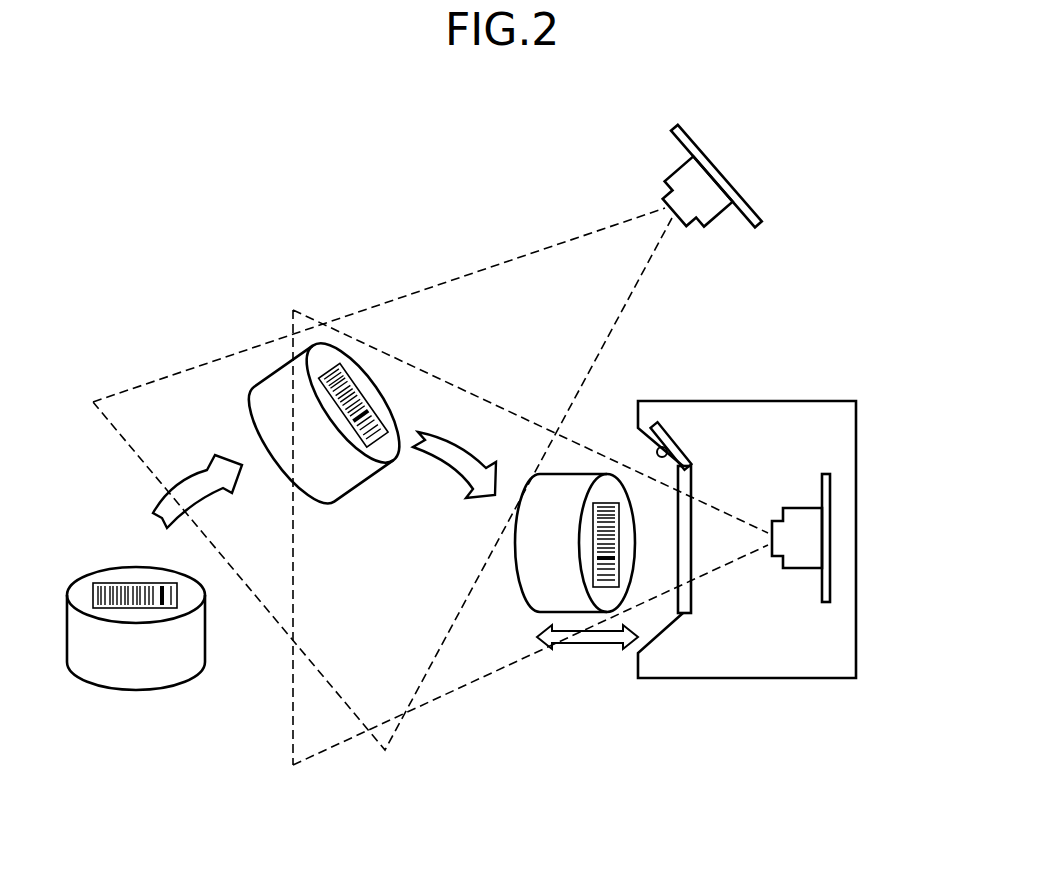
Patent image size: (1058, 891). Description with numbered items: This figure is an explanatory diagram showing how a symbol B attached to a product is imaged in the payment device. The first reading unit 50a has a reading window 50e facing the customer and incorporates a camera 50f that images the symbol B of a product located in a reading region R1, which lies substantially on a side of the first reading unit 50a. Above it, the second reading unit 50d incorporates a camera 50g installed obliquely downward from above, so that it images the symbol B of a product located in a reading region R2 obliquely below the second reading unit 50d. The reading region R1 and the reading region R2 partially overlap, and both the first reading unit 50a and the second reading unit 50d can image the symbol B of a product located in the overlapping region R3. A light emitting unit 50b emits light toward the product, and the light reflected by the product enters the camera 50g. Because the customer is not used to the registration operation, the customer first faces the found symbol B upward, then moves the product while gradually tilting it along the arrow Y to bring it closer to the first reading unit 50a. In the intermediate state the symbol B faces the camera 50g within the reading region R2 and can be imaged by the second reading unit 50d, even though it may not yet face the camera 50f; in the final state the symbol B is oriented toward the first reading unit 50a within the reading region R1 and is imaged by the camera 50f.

The first reading unit 50a is at (856, 466).
The light emitting unit 50b is at (678, 435).
The second reading unit 50d is at (730, 177).
The reading window 50e is at (690, 593).
The camera 50f is at (807, 507).
The camera 50g is at (672, 171).
The symbol B is at (108, 583).
The reading region R1 is at (483, 681).
The reading region R2 is at (175, 377).
The overlapping region R3 is at (440, 398).
The arrow Y is at (196, 486).